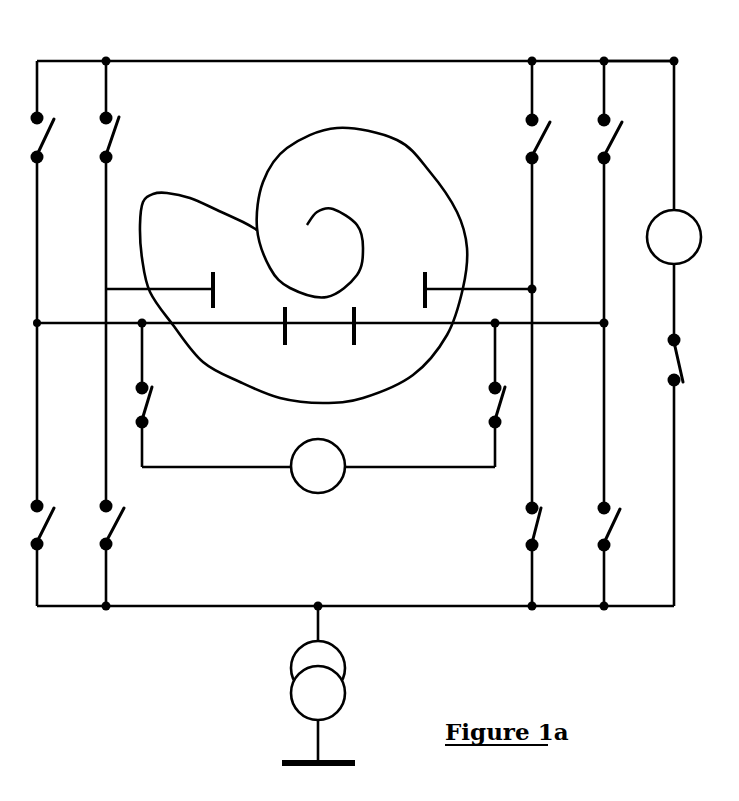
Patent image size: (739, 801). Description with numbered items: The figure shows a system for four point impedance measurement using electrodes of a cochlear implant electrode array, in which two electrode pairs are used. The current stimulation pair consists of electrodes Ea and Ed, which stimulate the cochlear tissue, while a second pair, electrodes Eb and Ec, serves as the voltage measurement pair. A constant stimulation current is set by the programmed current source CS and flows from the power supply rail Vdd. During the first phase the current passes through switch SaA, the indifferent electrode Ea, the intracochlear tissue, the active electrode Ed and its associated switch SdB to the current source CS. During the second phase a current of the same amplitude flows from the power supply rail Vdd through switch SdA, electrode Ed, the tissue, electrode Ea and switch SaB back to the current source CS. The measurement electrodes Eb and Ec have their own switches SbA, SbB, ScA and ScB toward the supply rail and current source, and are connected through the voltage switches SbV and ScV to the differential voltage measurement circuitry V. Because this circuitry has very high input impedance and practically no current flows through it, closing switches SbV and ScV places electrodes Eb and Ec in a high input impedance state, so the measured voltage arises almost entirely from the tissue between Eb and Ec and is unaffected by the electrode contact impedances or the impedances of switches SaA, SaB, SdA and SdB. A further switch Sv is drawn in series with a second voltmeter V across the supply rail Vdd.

The power supply rail Vdd is at (641, 42).
The switch SbA is at (63, 150).
The switch SaA is at (133, 150).
The switch SdA is at (557, 152).
The switch ScA is at (628, 152).
The switch SbB is at (62, 541).
The switch SaB is at (133, 541).
The switch SdB is at (556, 542).
The switch ScB is at (627, 542).
The voltage switch SbV is at (172, 410).
The voltage switch ScV is at (469, 410).
The switch for right-hand voltmeter Sv is at (654, 361).
The differential voltage measurement circuitry V is at (496, 351).
The indifferent electrode Ea is at (167, 273).
The voltage measurement electrode Eb is at (285, 345).
The voltage measurement electrode Ec is at (352, 345).
The active electrode Ed is at (472, 273).
The current source CS is at (318, 684).